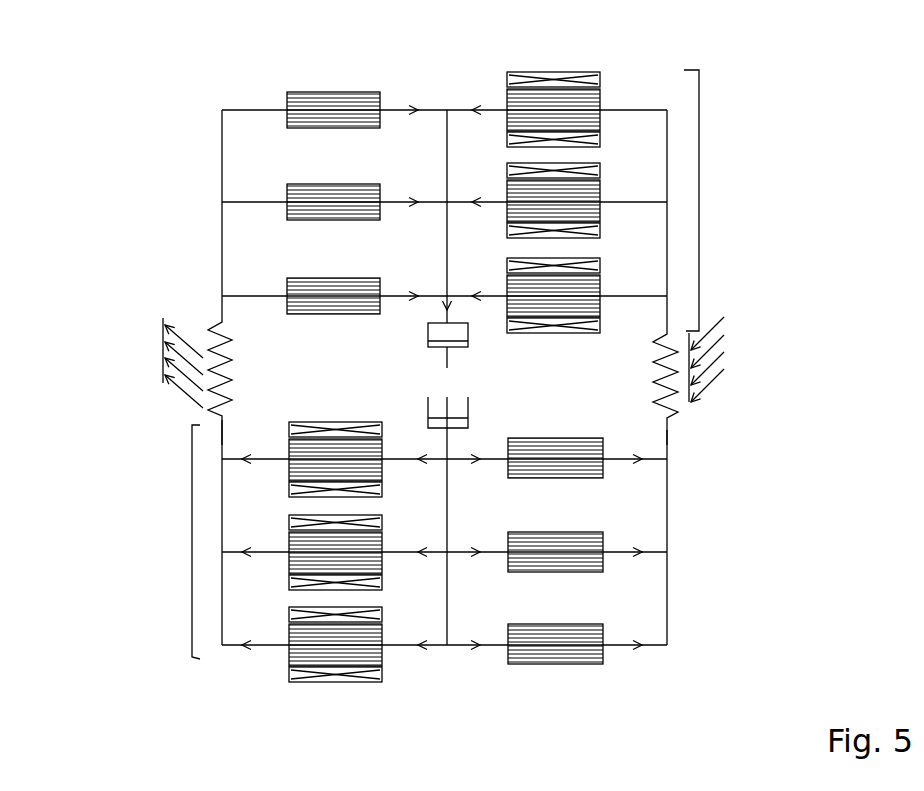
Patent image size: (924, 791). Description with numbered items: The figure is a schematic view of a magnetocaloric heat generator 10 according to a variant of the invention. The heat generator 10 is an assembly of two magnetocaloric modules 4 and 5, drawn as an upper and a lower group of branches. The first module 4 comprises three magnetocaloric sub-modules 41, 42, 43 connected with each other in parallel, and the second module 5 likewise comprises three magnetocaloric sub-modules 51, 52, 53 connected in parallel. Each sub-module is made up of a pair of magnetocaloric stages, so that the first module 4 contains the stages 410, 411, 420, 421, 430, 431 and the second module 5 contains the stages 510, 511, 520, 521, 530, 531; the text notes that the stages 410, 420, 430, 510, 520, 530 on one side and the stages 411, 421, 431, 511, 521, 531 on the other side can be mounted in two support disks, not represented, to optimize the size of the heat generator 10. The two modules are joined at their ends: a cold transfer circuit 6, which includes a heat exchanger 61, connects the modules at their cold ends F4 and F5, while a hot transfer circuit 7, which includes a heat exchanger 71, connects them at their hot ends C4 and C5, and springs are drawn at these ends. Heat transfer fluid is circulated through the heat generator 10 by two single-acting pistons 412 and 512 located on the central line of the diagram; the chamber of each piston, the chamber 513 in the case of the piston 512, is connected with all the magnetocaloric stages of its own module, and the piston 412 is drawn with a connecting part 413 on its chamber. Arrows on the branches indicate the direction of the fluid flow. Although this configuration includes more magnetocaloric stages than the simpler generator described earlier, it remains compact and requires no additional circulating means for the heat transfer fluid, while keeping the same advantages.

The heat generator 10 is at (824, 220).
The magnetocaloric module 4 is at (703, 204).
The magnetocaloric sub-module 41 is at (248, 106).
The magnetocaloric sub-module 42 is at (248, 200).
The magnetocaloric sub-module 43 is at (248, 292).
The magnetocaloric stage 410 is at (332, 105).
The magnetocaloric stage 411 is at (530, 90).
The magnetocaloric stage 420 is at (334, 200).
The magnetocaloric stage 421 is at (592, 200).
The magnetocaloric stage 430 is at (334, 290).
The magnetocaloric stage 431 is at (592, 290).
The single-acting piston 412 is at (474, 342).
The contact of switch 413 is at (427, 336).
The magnetocaloric module 5 is at (191, 545).
The magnetocaloric sub-module 51 is at (640, 470).
The magnetocaloric sub-module 52 is at (640, 560).
The magnetocaloric sub-module 53 is at (640, 655).
The magnetocaloric stage 510 is at (291, 447).
The magnetocaloric stage 511 is at (551, 455).
The magnetocaloric stage 520 is at (292, 548).
The magnetocaloric stage 521 is at (550, 556).
The magnetocaloric stage 530 is at (292, 641).
The magnetocaloric stage 531 is at (550, 642).
The single-acting piston 512 is at (417, 415).
The chamber 513 is at (466, 428).
The cold transfer circuit 6 is at (745, 350).
The heat exchanger 61 is at (674, 424).
The hot transfer circuit 7 is at (126, 345).
The heat exchanger 71 is at (170, 350).
The hot end C4 is at (216, 320).
The cold end F4 is at (672, 325).
The hot end C5 is at (215, 440).
The cold end F5 is at (670, 430).